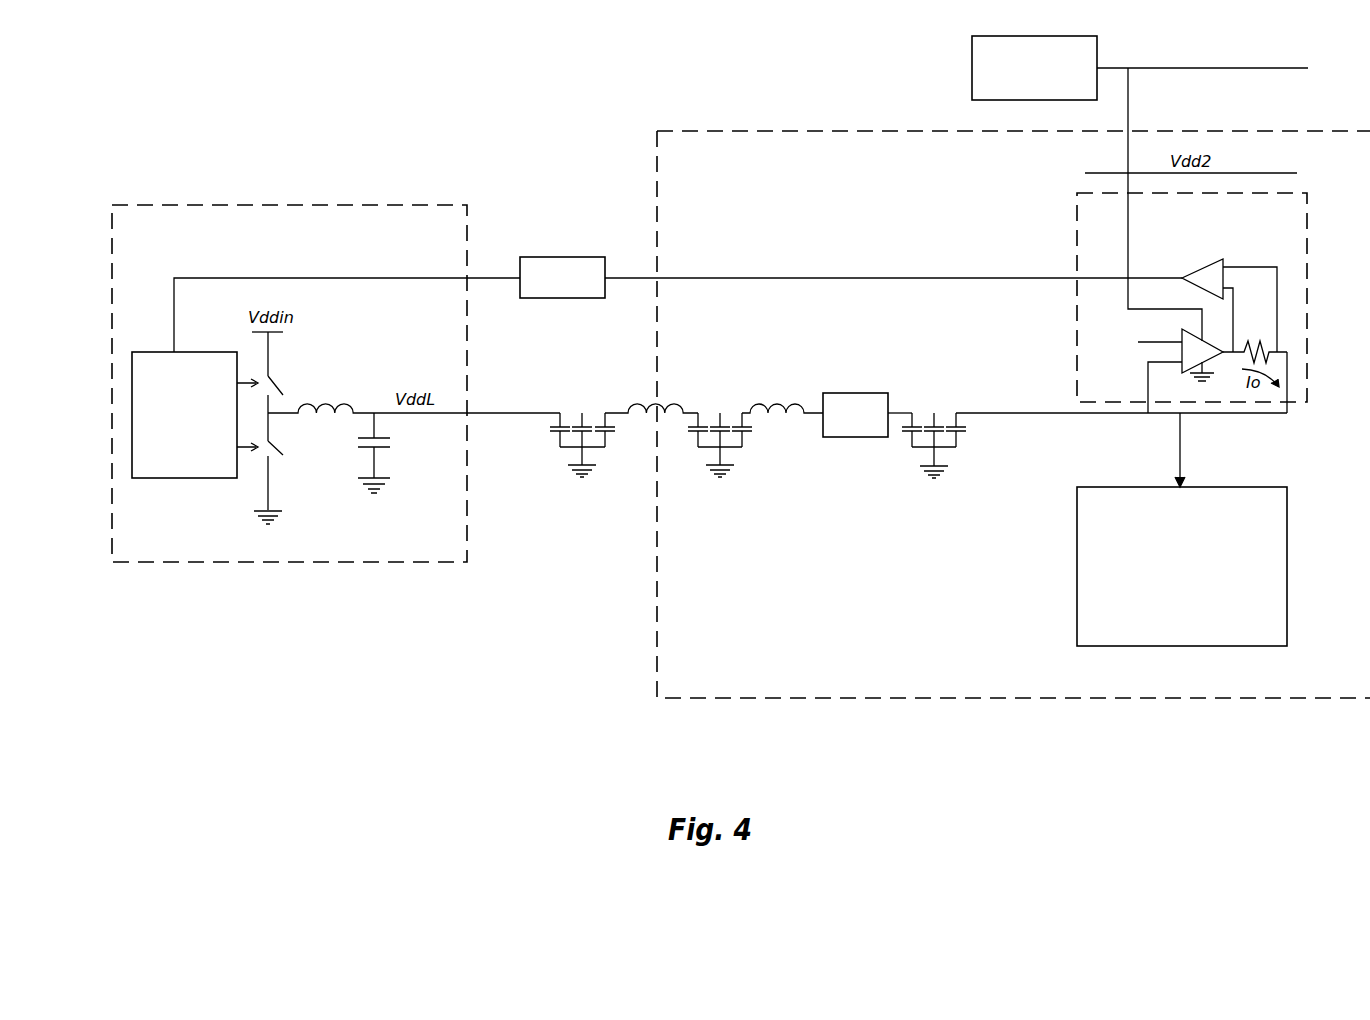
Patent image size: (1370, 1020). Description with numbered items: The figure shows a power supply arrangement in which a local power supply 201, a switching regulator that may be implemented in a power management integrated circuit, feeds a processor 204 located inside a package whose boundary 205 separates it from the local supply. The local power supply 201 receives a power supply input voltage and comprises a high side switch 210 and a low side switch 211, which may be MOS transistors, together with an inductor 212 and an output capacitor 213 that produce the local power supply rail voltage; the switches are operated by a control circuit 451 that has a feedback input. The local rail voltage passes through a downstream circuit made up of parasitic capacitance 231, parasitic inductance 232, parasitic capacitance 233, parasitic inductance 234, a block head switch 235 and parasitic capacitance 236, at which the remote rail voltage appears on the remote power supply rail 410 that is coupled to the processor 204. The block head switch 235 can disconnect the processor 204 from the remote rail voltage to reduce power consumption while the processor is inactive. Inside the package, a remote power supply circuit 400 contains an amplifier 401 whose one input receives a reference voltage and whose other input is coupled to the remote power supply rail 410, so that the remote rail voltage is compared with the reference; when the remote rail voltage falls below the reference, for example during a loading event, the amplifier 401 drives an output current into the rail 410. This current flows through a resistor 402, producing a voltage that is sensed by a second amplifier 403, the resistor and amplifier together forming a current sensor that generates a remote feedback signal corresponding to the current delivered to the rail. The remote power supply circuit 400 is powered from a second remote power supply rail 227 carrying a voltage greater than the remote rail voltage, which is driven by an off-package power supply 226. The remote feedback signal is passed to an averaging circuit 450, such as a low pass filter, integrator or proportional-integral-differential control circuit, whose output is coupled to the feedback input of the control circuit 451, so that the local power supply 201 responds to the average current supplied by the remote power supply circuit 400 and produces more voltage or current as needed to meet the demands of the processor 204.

The local power supply circuit 201 is at (467, 205).
The control circuit 451 is at (195, 415).
The high side switch 210 is at (290, 372).
The low side switch 211 is at (286, 468).
The inductor 212 is at (321, 387).
The output capacitor 213 is at (393, 453).
The averaging circuit 450 is at (560, 298).
The boundary 205 is at (1013, 414).
The parasitic capacitance 231 is at (560, 445).
The parasitic inductance 232 is at (651, 390).
The parasitic capacitance 233 is at (735, 445).
The parasitic inductance 234 is at (782, 429).
The block head switch 235 is at (835, 437).
The parasitic capacitance 236 is at (956, 445).
The remote power supply rail 410 is at (1054, 410).
The off package power supply 226 is at (1034, 68).
The second remote power supply rail 227 is at (1130, 140).
The remote power supply circuit 400 is at (1308, 308).
The amplifier 403 is at (1201, 267).
The amplifier 401 is at (1189, 374).
The resistor 402 is at (1255, 341).
The processor 204 is at (1182, 529).